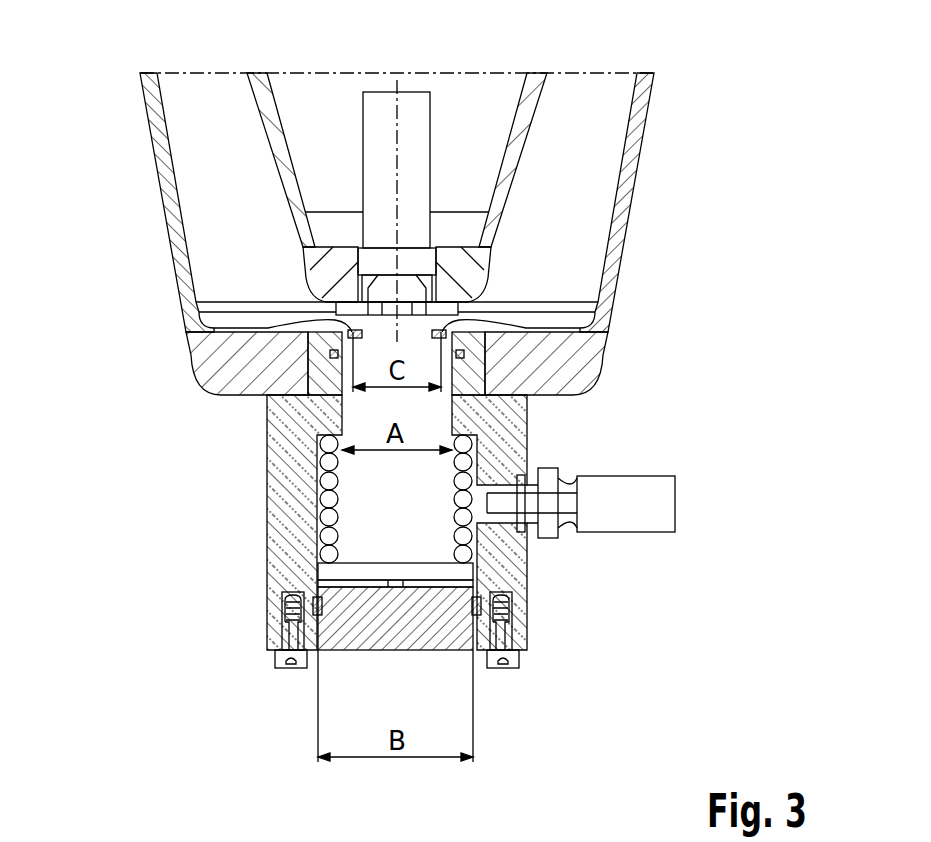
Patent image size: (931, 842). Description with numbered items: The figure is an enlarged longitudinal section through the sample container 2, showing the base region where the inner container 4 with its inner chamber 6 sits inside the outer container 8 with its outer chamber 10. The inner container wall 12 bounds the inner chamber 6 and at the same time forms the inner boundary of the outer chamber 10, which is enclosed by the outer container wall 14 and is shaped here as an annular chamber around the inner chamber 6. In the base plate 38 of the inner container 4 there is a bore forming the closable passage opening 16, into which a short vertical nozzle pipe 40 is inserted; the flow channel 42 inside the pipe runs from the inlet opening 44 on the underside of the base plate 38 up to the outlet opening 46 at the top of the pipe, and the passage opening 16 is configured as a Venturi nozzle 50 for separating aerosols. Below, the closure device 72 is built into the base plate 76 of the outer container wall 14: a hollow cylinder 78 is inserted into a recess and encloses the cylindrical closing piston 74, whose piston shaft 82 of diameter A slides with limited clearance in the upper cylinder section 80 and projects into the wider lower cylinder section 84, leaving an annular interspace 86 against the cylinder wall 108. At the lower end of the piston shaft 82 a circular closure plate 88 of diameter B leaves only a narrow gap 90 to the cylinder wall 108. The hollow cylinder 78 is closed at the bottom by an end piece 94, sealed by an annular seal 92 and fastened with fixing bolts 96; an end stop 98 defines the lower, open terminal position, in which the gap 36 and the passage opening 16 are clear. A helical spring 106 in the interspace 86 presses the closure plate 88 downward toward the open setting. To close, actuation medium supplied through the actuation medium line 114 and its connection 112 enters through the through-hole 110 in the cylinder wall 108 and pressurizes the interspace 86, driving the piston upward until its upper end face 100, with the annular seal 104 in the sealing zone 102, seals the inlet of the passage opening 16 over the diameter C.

The sample container 2 is at (66, 49).
The inner container 4 is at (466, 108).
The inner chamber 6 is at (505, 108).
The outer container 8 is at (200, 124).
The outer chamber 10 is at (220, 213).
The inner container wall 12 is at (510, 180).
The outer container wall 14 is at (630, 202).
The closable passage opening 16 is at (412, 260).
The gap 36 is at (213, 384).
The base plate 38 is at (337, 261).
The nozzle pipe 40 is at (433, 228).
The flow channel 42 is at (380, 188).
The inlet opening 44 is at (458, 308).
The outlet opening 46 is at (405, 92).
The Venturi nozzle 50 is at (387, 283).
The closure device 72 is at (327, 527).
The closing piston 74 is at (365, 415).
The base plate 76 is at (567, 383).
The hollow cylinder 78 is at (520, 585).
The upper cylinder section 80 is at (455, 410).
The piston shaft 82 is at (365, 402).
The lower cylinder section 84 is at (313, 492).
The annular interspace 86 is at (552, 528).
The closure plate 88 is at (440, 573).
The gap 90 is at (300, 607).
The annular seal 92 is at (285, 620).
The end piece 94 is at (423, 637).
The fixing bolts 96 is at (519, 665).
The end stop 98 is at (400, 583).
The end face 100 is at (540, 333).
The sealing zone 102 is at (515, 358).
The annular seal 104 is at (330, 353).
The helical spring 106 is at (320, 577).
The cylinder wall 108 is at (530, 618).
The through-hole 110 is at (498, 485).
The connection 112 is at (577, 530).
The actuation medium line 114 is at (675, 495).